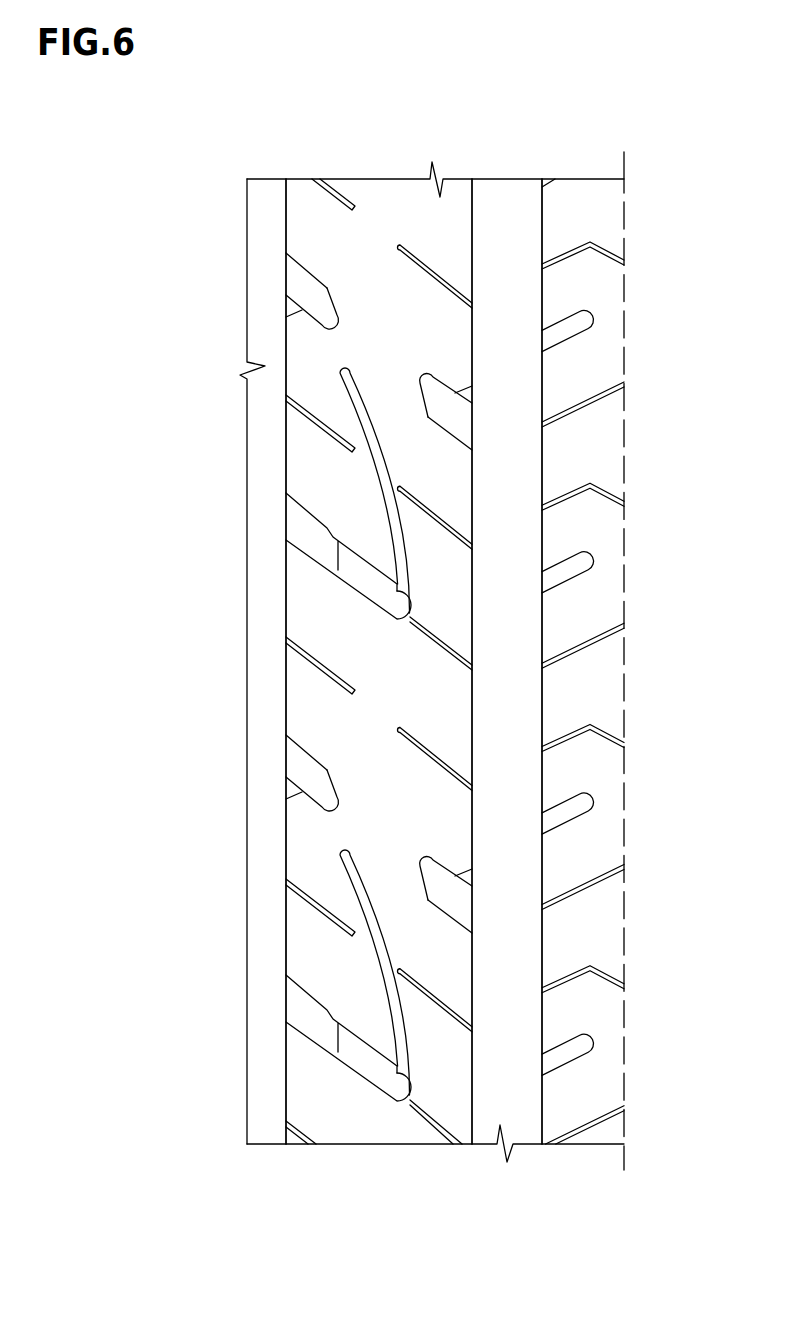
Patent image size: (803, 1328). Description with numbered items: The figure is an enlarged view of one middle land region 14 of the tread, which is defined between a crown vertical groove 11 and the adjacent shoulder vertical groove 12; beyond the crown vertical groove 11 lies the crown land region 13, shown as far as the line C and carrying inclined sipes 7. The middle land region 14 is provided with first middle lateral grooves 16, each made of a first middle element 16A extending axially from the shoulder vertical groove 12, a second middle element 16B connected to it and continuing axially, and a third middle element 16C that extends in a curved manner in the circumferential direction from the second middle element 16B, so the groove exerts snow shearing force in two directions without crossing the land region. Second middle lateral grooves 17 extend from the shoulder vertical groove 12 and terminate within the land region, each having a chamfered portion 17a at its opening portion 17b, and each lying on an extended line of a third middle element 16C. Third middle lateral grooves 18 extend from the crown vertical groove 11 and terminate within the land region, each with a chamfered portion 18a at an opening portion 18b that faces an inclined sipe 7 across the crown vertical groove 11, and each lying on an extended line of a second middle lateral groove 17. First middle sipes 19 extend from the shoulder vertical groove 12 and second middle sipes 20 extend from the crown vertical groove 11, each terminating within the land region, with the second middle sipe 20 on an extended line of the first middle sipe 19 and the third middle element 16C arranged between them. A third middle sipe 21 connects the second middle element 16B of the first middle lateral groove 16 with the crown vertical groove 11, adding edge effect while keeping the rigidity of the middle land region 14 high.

The inclined sipe 7 is at (577, 890).
The tire equator C is at (624, 646).
The crown vertical groove 11 is at (505, 208).
The shoulder vertical groove 12 is at (265, 207).
The crown land region 13 is at (583, 212).
The middle land region 14 is at (376, 207).
The first middle lateral groove 16 is at (252, 745).
The first middle element 16A is at (313, 535).
The second middle element 16B is at (370, 583).
The third middle element 16C is at (383, 477).
The second middle lateral groove 17 is at (242, 552).
The chamfered portion 17a is at (290, 788).
The opening portion 17b is at (284, 746).
The third middle lateral groove 18 is at (574, 661).
The chamfered portion 18a is at (455, 877).
The opening portion 18b is at (472, 912).
The first middle sipe 19 is at (322, 665).
The second middle sipe 20 is at (432, 748).
The connecting sipe 21 is at (435, 632).